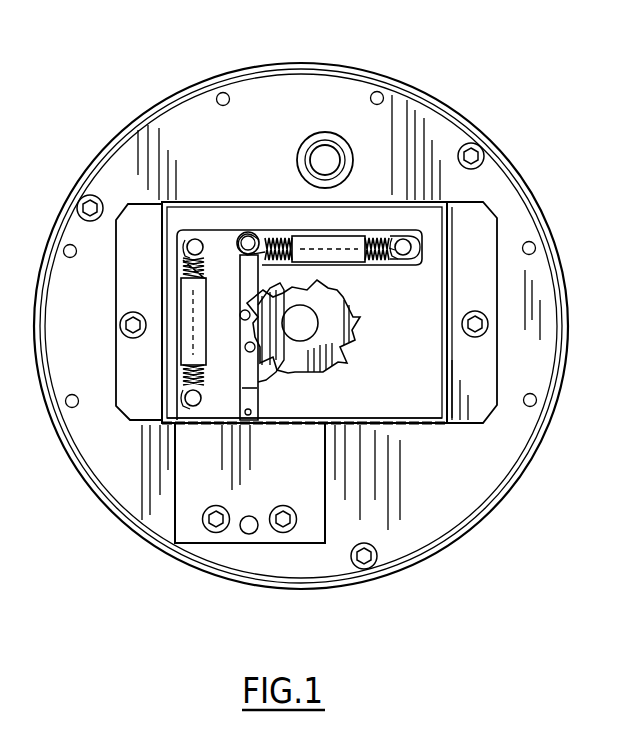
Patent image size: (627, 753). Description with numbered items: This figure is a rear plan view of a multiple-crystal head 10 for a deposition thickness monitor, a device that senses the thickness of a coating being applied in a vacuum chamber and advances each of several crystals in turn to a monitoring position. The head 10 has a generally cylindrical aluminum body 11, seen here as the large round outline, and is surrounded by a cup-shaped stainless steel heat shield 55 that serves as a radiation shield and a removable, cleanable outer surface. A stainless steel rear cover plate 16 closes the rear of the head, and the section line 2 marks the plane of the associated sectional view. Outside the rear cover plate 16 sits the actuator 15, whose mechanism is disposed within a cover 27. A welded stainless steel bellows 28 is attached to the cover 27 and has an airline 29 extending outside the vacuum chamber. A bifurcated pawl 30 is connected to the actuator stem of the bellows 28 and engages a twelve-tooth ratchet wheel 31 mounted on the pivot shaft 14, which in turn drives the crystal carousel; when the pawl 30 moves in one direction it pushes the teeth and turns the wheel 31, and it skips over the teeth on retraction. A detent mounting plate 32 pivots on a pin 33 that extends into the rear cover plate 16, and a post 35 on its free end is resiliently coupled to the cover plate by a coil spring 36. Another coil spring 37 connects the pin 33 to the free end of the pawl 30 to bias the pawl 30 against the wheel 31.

The multiple-crystal head 10 is at (497, 570).
The body 11 is at (507, 472).
The heat shield 55 is at (570, 307).
The rear cover plate 16 is at (395, 543).
The section line 2- 2 is at (262, 43).
The cover 27 is at (292, 199).
The actuator 15 is at (395, 436).
The bellows 28 is at (310, 505).
The airline 29 is at (243, 516).
The post 35 is at (184, 243).
The coil spring 36 is at (185, 300).
The detent mounting plate 32 is at (220, 243).
The bifurcated pawl 30 is at (252, 388).
The coil spring 37 is at (333, 240).
The pin 33 is at (394, 253).
The pivot shaft 14 is at (300, 323).
The ratchet wheel 31 is at (340, 323).